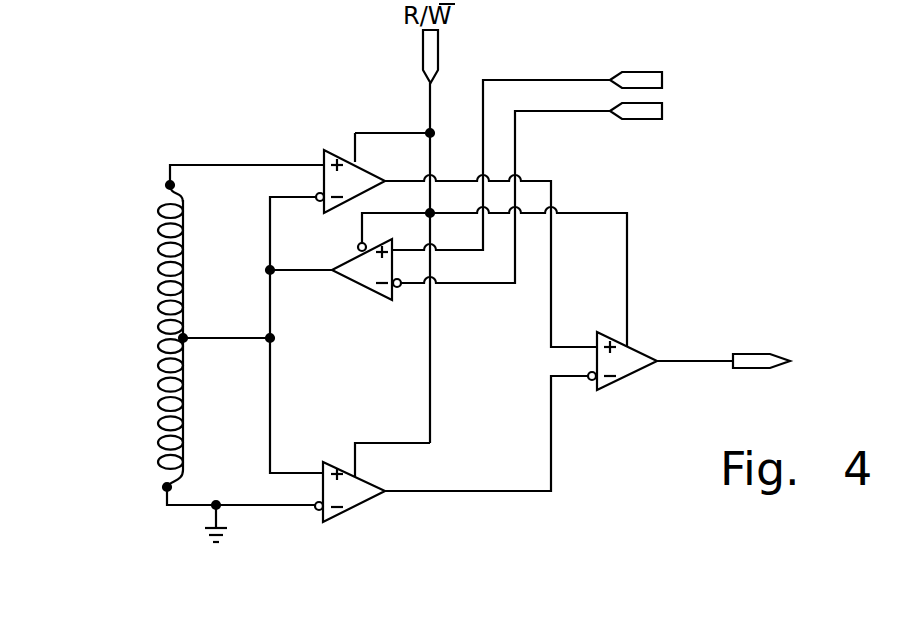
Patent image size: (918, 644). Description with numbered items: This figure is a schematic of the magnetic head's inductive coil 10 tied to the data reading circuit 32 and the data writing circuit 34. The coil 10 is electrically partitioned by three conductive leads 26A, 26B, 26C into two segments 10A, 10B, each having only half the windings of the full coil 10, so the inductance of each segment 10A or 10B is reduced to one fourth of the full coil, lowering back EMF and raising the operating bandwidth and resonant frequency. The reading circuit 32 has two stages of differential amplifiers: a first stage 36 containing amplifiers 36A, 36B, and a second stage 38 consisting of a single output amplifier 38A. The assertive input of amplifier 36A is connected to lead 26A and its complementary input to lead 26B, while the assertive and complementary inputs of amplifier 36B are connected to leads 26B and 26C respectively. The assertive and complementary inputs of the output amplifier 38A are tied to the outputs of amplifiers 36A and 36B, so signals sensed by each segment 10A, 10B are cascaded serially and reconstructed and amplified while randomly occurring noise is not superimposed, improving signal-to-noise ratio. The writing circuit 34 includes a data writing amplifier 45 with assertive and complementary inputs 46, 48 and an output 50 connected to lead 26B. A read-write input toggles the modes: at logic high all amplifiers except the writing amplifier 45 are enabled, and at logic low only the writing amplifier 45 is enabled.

The coil 10 is at (123, 336).
The first coil segment 10A is at (158, 290).
The second coil segment 10B is at (158, 438).
The electrical lead 26A is at (158, 183).
The electrical lead 26B is at (196, 334).
The electrical lead 26C is at (155, 489).
The data reading circuit 32 is at (405, 536).
The data writing circuit 34 is at (464, 234).
The first stage 36 is at (433, 359).
The amplifier 36A is at (433, 285).
The amplifier 36B is at (436, 467).
The second stage 38 is at (676, 449).
The output amplifier 38A is at (676, 363).
The data writing amplifier 45 is at (464, 209).
The assertive input 46 is at (394, 250).
The complementary input 48 is at (400, 286).
The output 50 is at (333, 271).